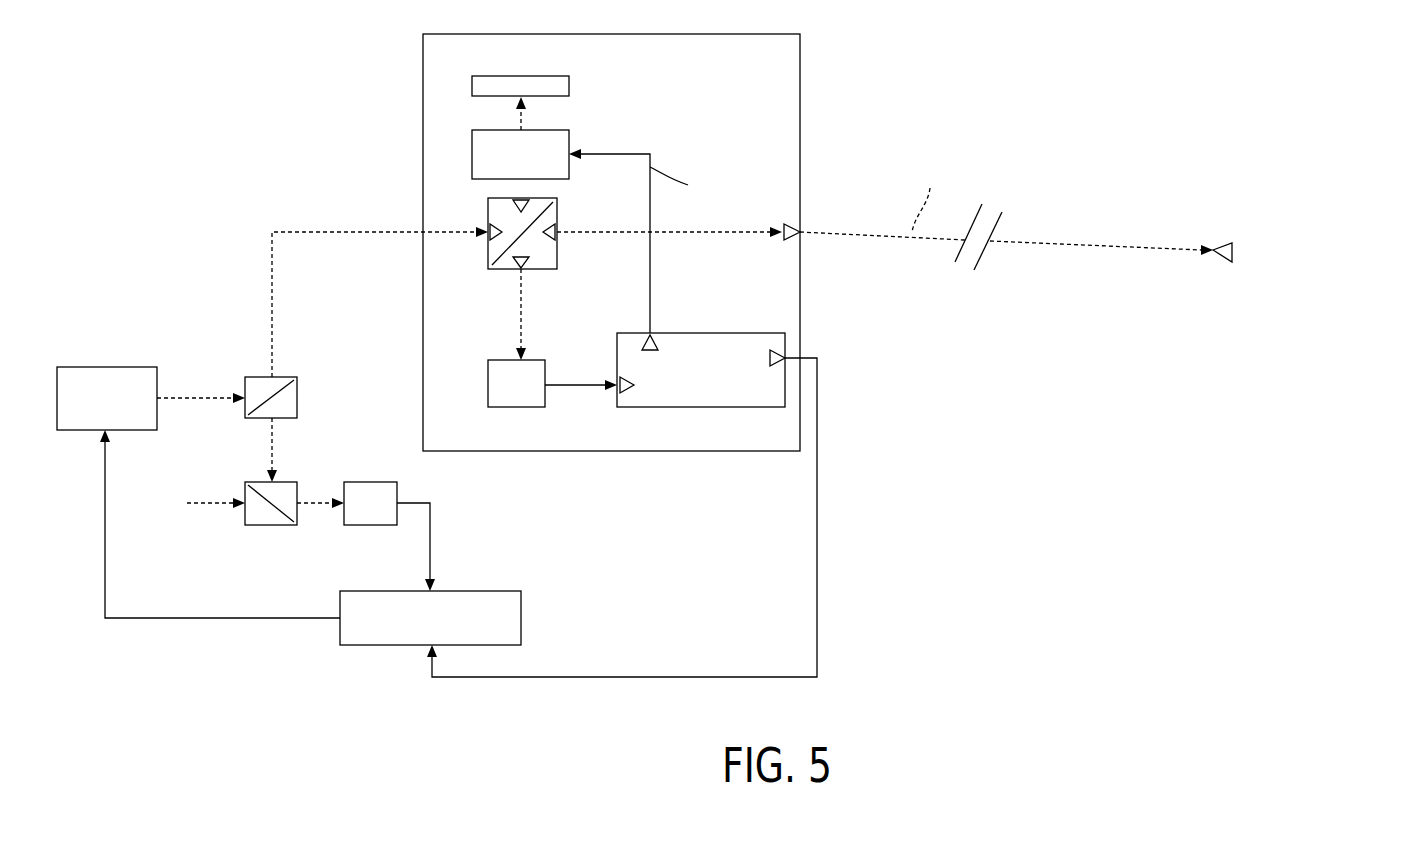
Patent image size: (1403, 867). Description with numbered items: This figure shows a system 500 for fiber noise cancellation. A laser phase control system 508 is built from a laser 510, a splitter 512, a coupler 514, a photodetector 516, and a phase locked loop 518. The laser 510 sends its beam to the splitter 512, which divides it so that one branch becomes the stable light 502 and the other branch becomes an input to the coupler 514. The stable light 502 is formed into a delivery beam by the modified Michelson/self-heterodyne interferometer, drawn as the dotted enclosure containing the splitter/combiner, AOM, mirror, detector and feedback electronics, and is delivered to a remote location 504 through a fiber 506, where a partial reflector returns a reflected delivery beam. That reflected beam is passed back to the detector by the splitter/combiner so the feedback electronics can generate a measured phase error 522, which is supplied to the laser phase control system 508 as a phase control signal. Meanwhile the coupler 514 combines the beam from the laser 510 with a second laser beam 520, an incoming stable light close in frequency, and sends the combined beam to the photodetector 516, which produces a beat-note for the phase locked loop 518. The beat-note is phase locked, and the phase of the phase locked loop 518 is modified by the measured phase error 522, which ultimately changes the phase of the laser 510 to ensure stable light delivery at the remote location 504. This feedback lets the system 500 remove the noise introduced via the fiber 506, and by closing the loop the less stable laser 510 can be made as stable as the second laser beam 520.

The system for fiber noise cancellation 500 is at (1210, 82).
The stable light 502 is at (325, 232).
The remote location 504 is at (1220, 247).
The fiber 506 is at (1083, 246).
The laser phase control system 508 is at (148, 270).
The laser 510 is at (105, 367).
The splitter 512 is at (256, 377).
The coupler 514 is at (297, 480).
The photodetector 516 is at (372, 482).
The phase locked loop 518 is at (523, 618).
The second laser beam 520 is at (208, 507).
The measured phase error 522 is at (817, 552).